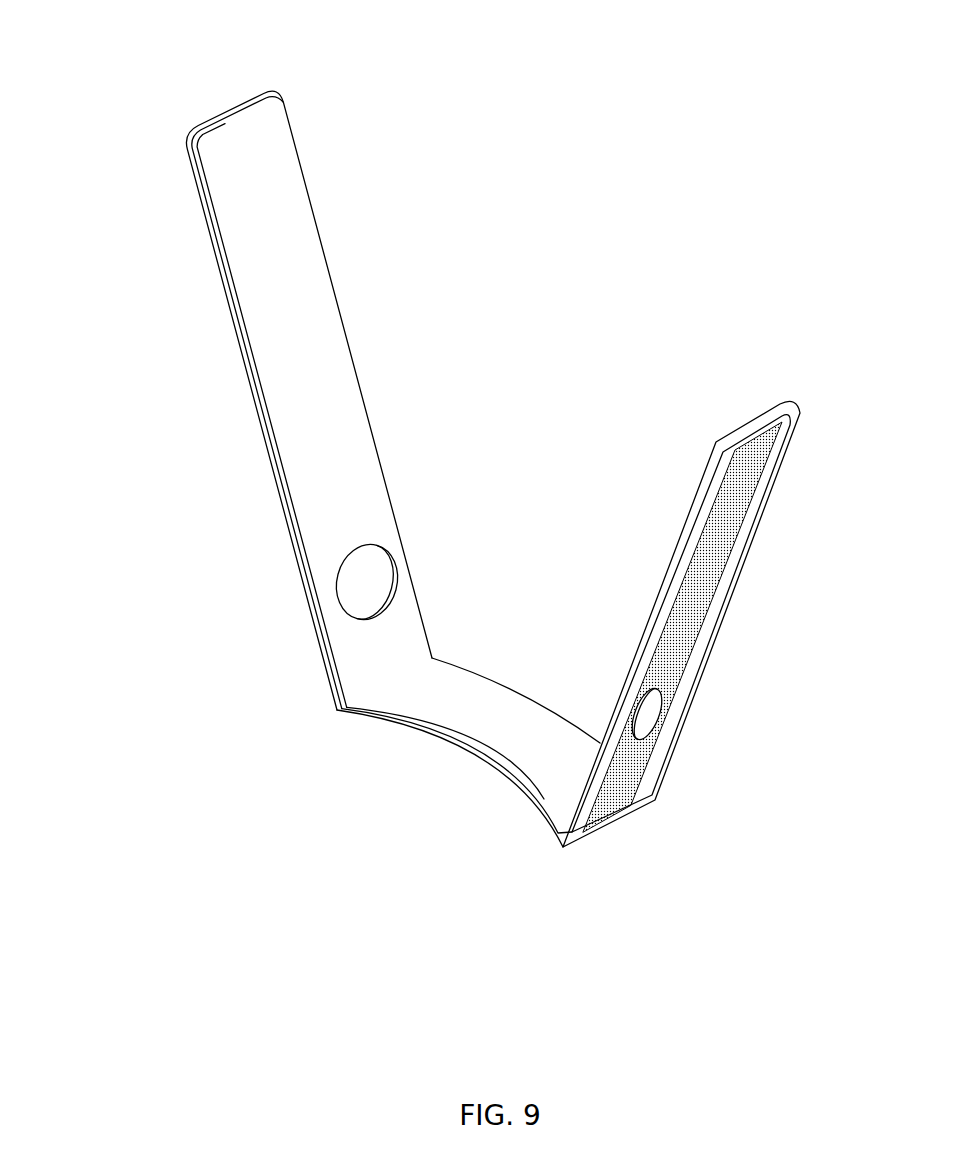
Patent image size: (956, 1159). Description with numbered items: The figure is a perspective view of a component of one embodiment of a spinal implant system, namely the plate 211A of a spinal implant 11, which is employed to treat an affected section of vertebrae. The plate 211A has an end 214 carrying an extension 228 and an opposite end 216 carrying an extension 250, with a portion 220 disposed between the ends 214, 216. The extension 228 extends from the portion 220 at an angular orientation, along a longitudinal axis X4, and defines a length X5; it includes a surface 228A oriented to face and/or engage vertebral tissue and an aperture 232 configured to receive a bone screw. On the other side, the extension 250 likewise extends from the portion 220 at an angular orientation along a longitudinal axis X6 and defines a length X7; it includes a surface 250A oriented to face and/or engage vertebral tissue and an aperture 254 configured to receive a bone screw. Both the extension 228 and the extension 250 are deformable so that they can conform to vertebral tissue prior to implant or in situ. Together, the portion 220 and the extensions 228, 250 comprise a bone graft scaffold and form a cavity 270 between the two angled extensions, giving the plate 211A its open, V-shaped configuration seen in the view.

The spinal implant 11 is at (140, 593).
The plate 211A is at (490, 181).
The end 214 is at (420, 650).
The end 216 is at (600, 743).
The portion 220 is at (472, 703).
The extension 228 is at (298, 258).
The surface 228A is at (383, 575).
The aperture 232 is at (367, 583).
The extension 250 is at (660, 612).
The surface 250A is at (732, 463).
The aperture 254 is at (628, 800).
The cavity 270 is at (600, 412).
The longitudinal axis X4 is at (251, 192).
The length X5 is at (123, 168).
The longitudinal axis X6 is at (737, 448).
The length X7 is at (835, 385).